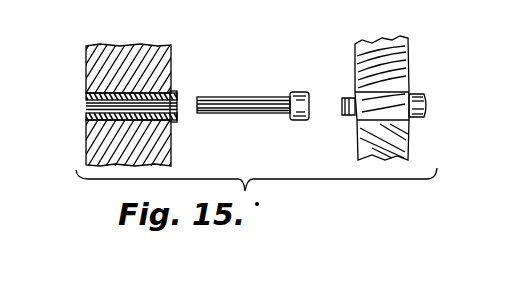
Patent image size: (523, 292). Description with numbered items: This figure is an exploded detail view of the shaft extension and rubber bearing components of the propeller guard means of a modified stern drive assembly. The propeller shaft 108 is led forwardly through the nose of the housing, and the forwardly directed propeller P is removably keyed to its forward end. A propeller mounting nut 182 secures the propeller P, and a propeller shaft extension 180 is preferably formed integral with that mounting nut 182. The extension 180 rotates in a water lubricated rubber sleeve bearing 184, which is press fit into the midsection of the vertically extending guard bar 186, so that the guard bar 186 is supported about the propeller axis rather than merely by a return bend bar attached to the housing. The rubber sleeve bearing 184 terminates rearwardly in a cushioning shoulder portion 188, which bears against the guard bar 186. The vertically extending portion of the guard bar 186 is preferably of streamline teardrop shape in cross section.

The guard bar 186 is at (171, 60).
The rubber sleeve bearing 184 is at (86, 118).
The cushioning shoulder portion 188 is at (176, 90).
The propeller shaft extension 180 is at (258, 97).
The propeller mounting nut 182 is at (307, 92).
The propeller P is at (358, 50).
The propeller shaft 108 is at (424, 94).